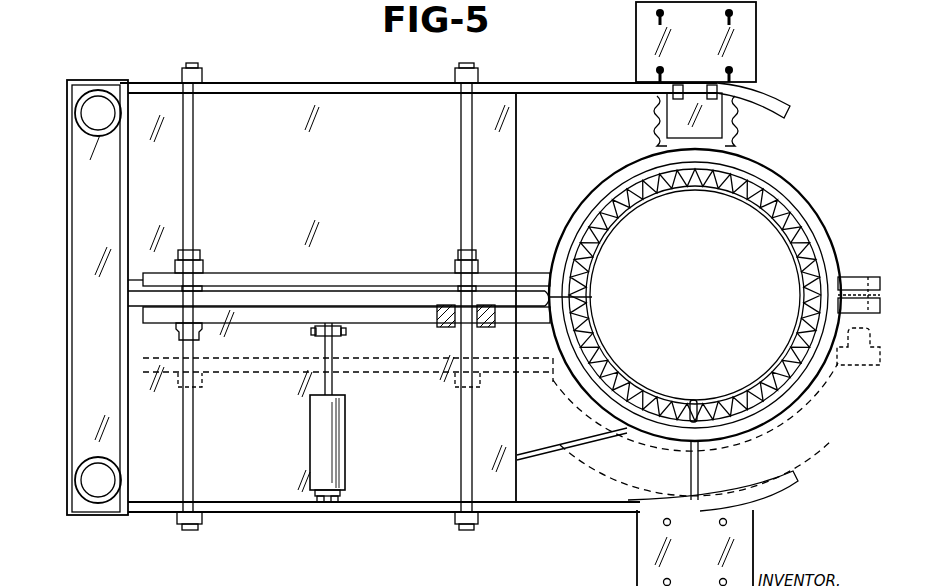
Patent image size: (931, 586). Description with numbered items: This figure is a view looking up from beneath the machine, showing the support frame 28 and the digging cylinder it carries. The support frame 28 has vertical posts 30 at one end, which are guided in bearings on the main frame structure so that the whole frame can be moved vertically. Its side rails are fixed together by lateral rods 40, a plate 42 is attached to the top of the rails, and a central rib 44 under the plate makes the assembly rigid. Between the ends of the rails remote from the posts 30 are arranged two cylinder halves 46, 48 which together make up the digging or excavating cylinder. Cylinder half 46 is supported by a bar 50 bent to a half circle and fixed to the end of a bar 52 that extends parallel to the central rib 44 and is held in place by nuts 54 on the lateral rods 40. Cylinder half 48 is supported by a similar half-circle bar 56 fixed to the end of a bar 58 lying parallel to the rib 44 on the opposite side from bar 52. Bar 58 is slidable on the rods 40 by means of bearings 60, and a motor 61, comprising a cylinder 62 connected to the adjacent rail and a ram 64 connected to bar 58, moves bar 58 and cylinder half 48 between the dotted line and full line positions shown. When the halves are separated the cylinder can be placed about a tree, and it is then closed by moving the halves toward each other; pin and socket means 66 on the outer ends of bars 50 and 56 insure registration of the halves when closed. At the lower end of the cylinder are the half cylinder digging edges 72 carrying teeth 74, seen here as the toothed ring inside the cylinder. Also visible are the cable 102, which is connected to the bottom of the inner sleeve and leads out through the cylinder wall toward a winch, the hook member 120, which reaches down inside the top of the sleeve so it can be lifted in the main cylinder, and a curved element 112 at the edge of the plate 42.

The support frame 28 is at (158, 549).
The vertical posts 30 is at (90, 108).
The lateral rods 40 is at (194, 157).
The plate 42 is at (155, 97).
The central rib 44 is at (328, 298).
The cylinder half 46 is at (705, 287).
The cylinder half 48 is at (803, 406).
The bar 50 is at (622, 176).
The bar 52 is at (535, 270).
The nuts 54 is at (202, 262).
The bar 56 is at (650, 428).
The bar 58 is at (523, 327).
The bearings 60 is at (203, 340).
The motor 61 is at (317, 412).
The cylinder 62 is at (330, 449).
The ram 64 is at (322, 384).
The pin and socket means 66 is at (861, 256).
The half cylinder digging edge 72 is at (777, 194).
The teeth 74 is at (732, 182).
The cable 102 is at (548, 453).
The upper band 112 is at (732, 114).
The hook member 120 is at (690, 470).